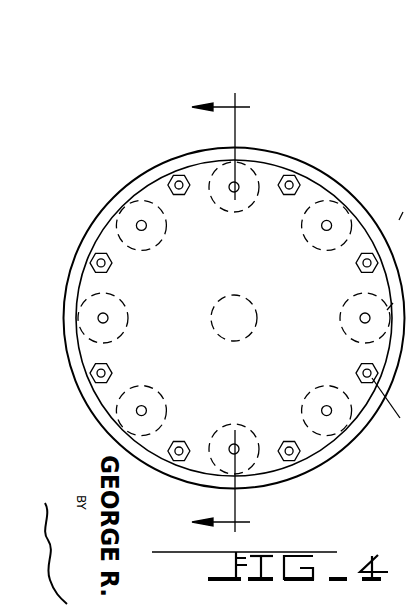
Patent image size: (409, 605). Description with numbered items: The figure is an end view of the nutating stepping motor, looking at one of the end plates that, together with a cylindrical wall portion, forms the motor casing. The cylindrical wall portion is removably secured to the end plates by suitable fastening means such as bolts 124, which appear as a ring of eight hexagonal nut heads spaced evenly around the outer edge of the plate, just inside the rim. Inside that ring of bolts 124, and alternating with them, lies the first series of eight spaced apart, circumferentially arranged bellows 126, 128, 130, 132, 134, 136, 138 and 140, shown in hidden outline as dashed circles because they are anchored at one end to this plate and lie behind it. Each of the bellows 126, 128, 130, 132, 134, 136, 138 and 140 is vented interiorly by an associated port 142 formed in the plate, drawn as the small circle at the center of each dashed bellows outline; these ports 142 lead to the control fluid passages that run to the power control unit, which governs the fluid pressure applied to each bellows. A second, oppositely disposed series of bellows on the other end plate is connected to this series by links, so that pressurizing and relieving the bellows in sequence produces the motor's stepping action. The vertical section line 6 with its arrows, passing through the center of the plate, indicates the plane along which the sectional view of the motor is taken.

The section line 6- 6 is at (208, 314).
The bolts 124 is at (176, 179).
The bellows 126 is at (263, 155).
The bellows 128 is at (338, 208).
The bellows 130 is at (377, 258).
The bellows 132 is at (333, 438).
The bellows 134 is at (256, 476).
The bellows 136 is at (120, 412).
The bellows 138 is at (82, 326).
The bellows 140 is at (117, 217).
The ports 142 is at (229, 196).